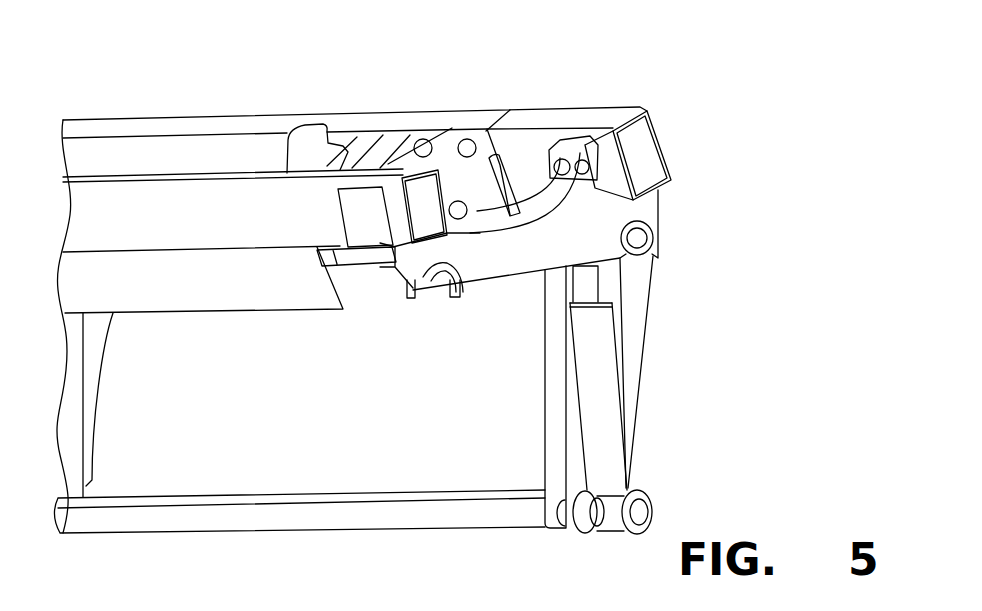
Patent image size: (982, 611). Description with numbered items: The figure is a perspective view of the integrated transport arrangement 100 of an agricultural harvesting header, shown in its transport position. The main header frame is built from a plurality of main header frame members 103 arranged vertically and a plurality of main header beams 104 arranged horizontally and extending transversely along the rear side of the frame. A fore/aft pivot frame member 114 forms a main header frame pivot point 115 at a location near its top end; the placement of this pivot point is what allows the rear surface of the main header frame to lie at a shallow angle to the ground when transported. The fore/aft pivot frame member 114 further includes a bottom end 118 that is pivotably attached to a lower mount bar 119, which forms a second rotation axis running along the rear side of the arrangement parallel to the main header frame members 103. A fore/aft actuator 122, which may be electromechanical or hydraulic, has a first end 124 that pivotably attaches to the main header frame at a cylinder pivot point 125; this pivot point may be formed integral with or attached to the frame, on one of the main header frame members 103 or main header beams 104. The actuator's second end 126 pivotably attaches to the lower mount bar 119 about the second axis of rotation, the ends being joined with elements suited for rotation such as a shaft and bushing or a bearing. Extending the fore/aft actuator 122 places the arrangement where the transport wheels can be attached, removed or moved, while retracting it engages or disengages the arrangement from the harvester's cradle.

The integrated transport arrangement 100 is at (715, 195).
The main header frame member 103 is at (665, 140).
The main header beam 104 is at (487, 290).
The fore/aft pivot frame member 114 is at (638, 347).
The main header frame pivot point 115 is at (634, 241).
The bottom end 118 is at (543, 473).
The lower mount bar 119 is at (475, 520).
The fore/aft actuator 122 is at (605, 423).
The first end 124 is at (556, 147).
The cylinder pivot point 125 is at (580, 150).
The second end 126 is at (607, 515).